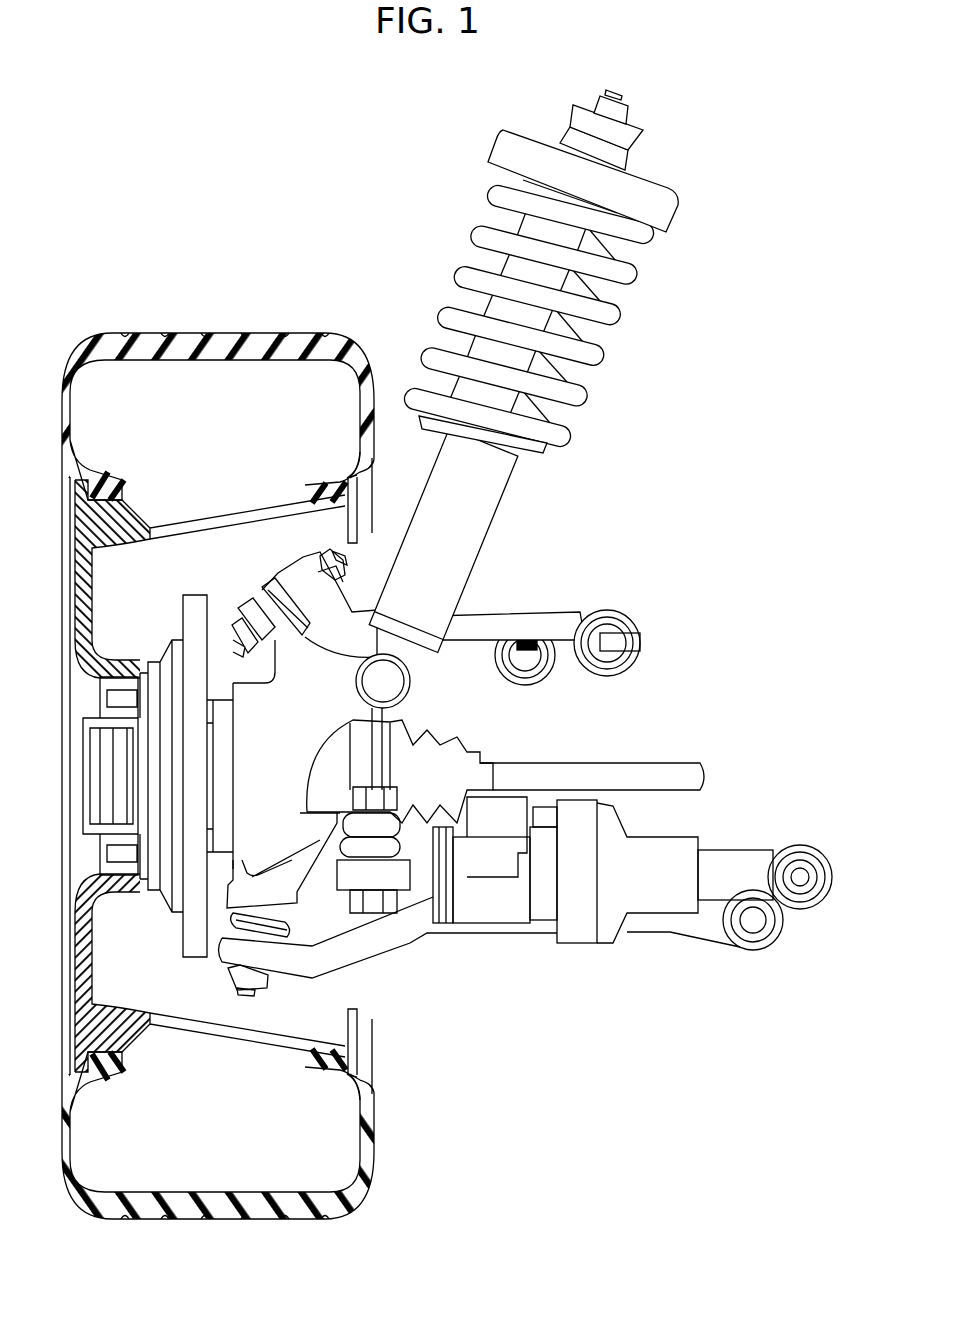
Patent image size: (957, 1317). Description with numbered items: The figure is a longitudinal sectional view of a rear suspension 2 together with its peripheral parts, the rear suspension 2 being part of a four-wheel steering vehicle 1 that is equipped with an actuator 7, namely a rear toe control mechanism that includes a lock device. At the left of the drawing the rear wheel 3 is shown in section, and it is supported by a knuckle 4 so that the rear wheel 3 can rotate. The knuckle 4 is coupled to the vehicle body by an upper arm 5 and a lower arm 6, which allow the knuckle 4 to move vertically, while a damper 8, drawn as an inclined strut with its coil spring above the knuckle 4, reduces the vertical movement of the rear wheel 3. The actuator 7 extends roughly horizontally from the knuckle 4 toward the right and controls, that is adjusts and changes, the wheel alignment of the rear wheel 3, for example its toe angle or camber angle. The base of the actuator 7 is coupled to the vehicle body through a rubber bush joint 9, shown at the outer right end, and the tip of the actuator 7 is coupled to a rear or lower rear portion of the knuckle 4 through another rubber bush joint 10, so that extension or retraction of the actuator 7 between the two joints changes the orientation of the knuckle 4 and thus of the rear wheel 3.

The vehicle 1 is at (701, 111).
The rear suspension 2 is at (728, 329).
The rear wheel 3 is at (206, 333).
The knuckle 4 is at (247, 788).
The upper arm 5 is at (480, 617).
The lower arm 6 is at (497, 917).
The actuator 7 is at (597, 972).
The damper 8 is at (422, 246).
The rubber bush joint 9 is at (805, 905).
The rubber bush joint 10 is at (393, 877).